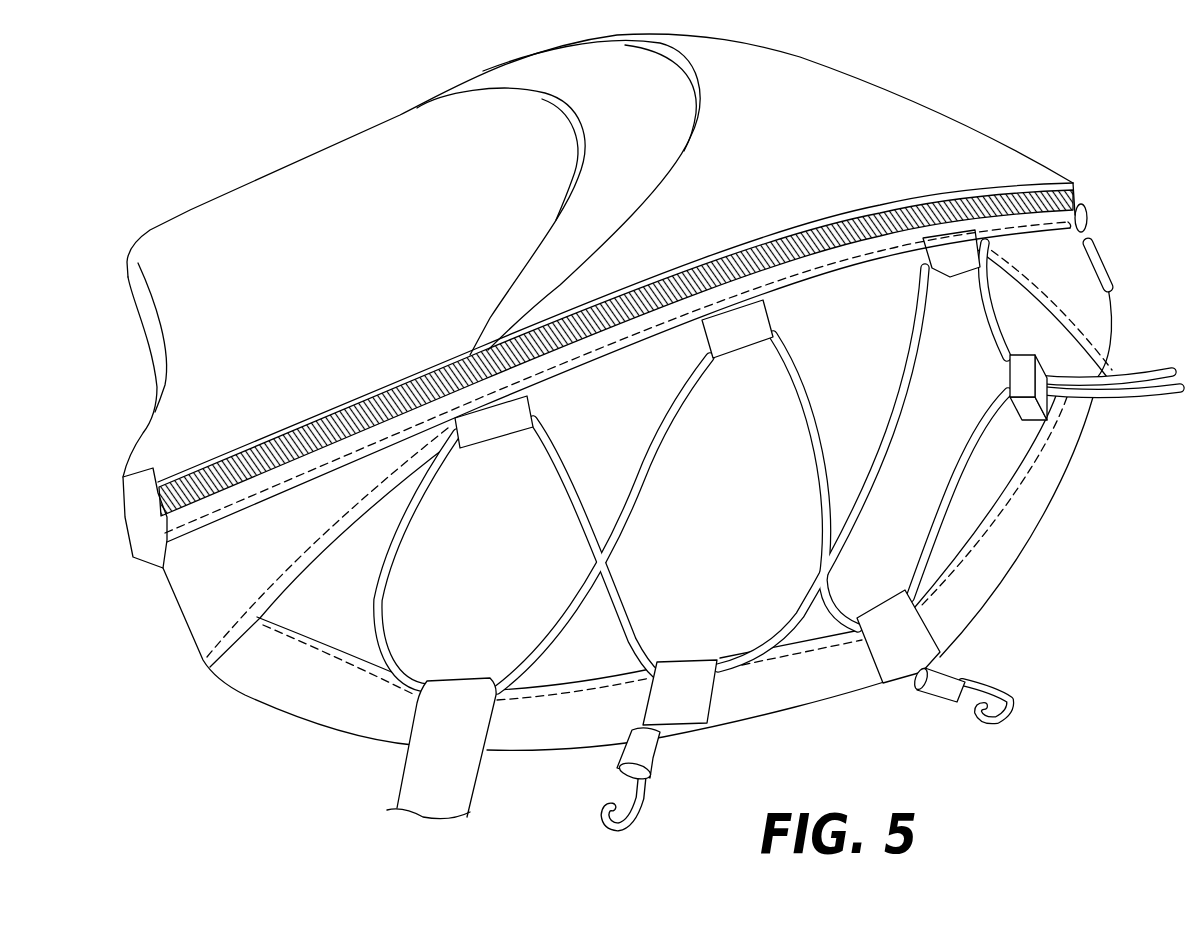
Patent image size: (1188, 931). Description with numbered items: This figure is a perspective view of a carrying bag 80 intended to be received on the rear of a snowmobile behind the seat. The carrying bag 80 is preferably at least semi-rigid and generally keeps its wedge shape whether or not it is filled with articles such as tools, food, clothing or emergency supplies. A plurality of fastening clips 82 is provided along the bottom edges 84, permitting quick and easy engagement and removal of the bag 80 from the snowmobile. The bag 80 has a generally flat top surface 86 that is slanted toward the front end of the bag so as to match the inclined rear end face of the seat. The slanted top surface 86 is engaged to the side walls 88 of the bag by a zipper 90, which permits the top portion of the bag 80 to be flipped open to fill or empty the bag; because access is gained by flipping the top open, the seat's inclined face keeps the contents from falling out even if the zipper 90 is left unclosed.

The carrying bag 80 is at (1093, 482).
The fastening clips 82 is at (605, 832).
The bottom edges 84 is at (820, 685).
The top surface 86 is at (380, 233).
The side walls 88 is at (900, 541).
The zipper 90 is at (870, 153).